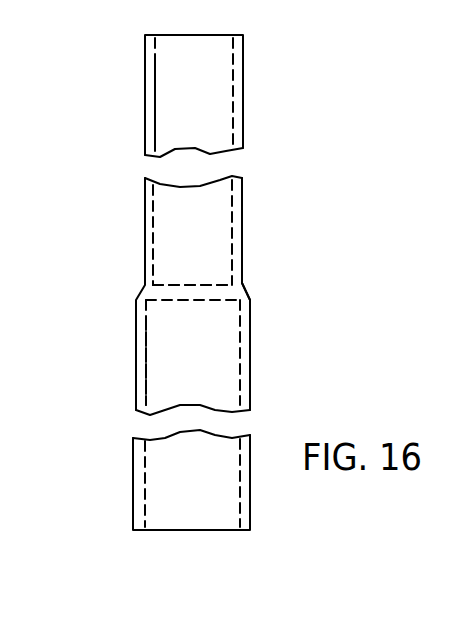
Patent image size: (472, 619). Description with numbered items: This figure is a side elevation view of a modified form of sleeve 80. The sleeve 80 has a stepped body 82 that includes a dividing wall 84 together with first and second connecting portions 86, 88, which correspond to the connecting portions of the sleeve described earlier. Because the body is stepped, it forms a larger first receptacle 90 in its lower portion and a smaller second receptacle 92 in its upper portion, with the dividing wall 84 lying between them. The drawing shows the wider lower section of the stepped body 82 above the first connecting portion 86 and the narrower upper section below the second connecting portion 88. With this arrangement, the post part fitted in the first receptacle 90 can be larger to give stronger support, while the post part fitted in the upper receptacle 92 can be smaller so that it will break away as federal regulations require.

The sleeve 80 is at (145, 218).
The stepped body 82 is at (242, 272).
The dividing wall 84 is at (183, 293).
The first connecting portion 86 is at (118, 482).
The second connecting portion 88 is at (132, 83).
The first receptacle 90 is at (172, 345).
The second receptacle 92 is at (176, 117).